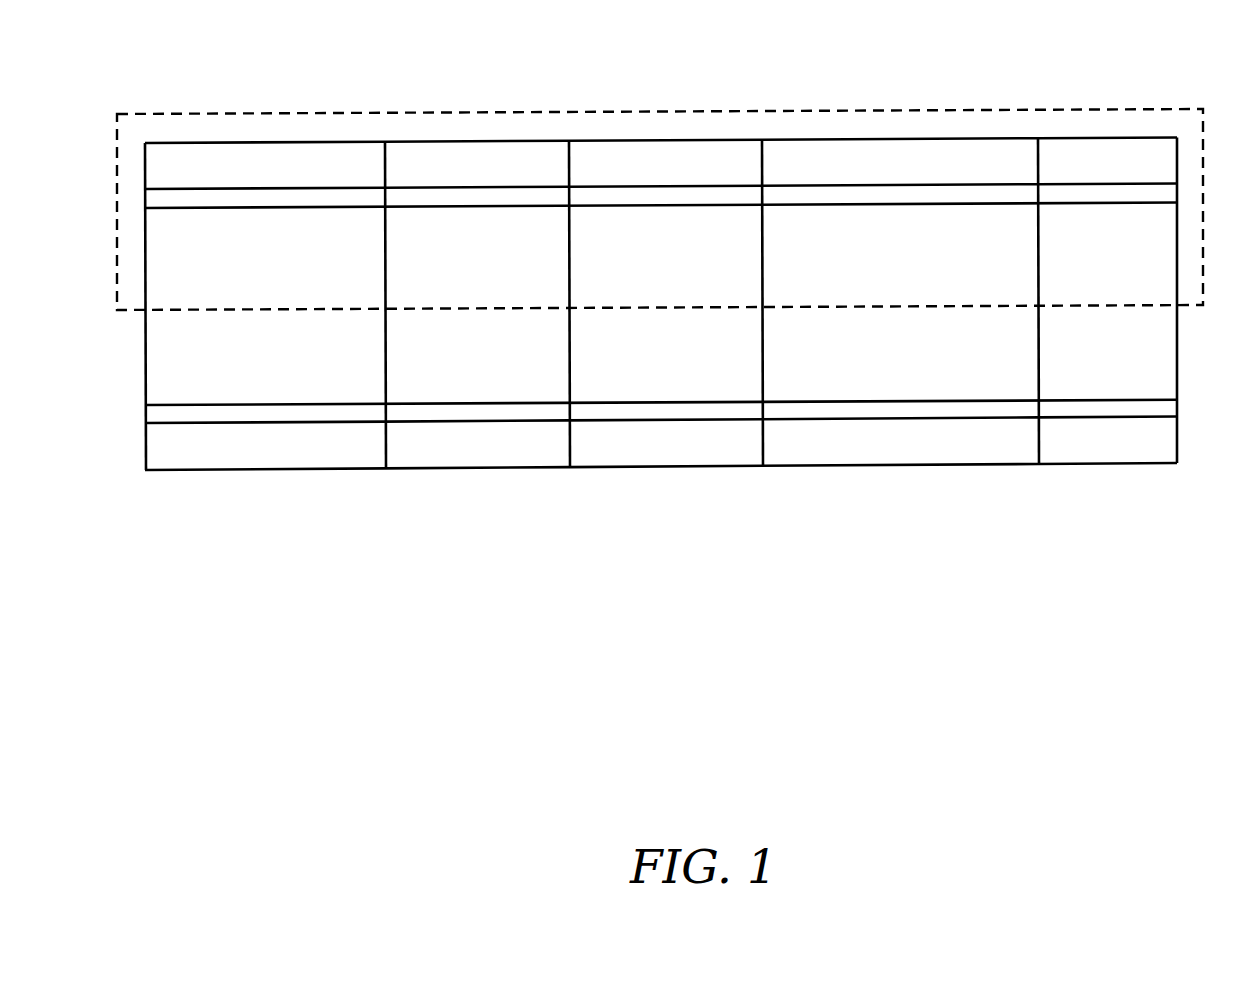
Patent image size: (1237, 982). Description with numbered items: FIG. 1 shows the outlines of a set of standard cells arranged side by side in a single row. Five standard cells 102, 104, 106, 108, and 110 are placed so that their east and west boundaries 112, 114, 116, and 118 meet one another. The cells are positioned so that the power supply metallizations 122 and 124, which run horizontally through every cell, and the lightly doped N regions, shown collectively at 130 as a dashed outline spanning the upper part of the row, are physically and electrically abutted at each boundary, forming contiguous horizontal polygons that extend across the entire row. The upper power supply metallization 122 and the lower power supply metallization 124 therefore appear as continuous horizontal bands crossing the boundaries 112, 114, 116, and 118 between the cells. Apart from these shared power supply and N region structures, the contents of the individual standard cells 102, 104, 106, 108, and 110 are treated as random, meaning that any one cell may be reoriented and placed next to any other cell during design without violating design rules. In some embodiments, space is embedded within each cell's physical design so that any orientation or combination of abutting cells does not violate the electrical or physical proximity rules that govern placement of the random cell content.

The standard cell 102 is at (264, 471).
The standard cell 104 is at (467, 469).
The standard cell 106 is at (668, 468).
The standard cell 108 is at (900, 466).
The standard cell 110 is at (1102, 465).
The east/west boundary 112 is at (385, 272).
The east/west boundary 114 is at (569, 271).
The east/west boundary 116 is at (762, 270).
The east/west boundary 118 is at (1038, 268).
The power supply metallization 122 is at (870, 205).
The power supply metallization 124 is at (238, 404).
The lightly doped N regions 130 is at (1072, 110).